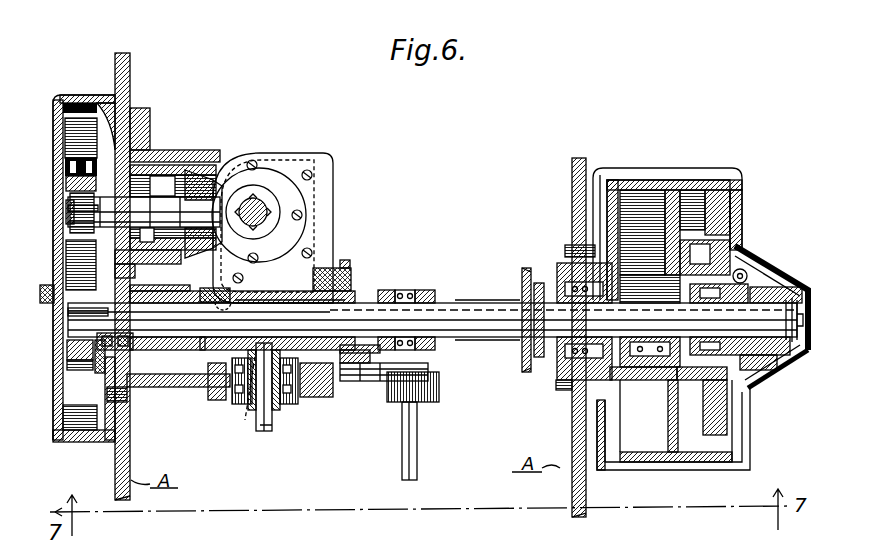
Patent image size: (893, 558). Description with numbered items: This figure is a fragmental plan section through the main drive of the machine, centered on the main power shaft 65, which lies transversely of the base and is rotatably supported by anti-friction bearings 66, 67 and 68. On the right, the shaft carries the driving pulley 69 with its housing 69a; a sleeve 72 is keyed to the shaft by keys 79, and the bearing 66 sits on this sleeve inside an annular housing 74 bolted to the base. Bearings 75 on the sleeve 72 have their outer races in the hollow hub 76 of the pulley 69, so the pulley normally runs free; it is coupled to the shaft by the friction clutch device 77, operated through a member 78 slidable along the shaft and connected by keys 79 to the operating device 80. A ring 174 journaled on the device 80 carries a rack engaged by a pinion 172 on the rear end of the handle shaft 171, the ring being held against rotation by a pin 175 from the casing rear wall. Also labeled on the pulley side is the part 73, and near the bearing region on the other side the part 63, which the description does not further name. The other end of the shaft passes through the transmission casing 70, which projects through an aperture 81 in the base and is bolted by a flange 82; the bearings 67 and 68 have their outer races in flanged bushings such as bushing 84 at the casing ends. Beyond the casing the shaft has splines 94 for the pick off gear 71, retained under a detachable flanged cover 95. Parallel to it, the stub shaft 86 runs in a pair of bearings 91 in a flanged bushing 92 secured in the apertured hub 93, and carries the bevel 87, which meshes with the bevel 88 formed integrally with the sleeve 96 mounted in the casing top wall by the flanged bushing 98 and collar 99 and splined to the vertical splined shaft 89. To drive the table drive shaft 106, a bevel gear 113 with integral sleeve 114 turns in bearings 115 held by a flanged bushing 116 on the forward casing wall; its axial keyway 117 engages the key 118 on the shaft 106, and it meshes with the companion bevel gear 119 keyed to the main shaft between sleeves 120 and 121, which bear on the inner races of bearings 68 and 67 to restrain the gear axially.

The bearing block 63 is at (386, 290).
The main power shaft 65 is at (466, 302).
The anti-friction bearing 66 is at (536, 365).
The anti-friction bearing 67 is at (346, 285).
The anti-friction bearing 68 is at (134, 353).
The driving pulley 69 is at (680, 168).
The housing 69a is at (730, 466).
The transmission casing 70 is at (176, 388).
The gear 71 is at (54, 357).
The sleeve 72 is at (556, 282).
The gear 73 is at (652, 282).
The annular housing 74 is at (572, 386).
The bearings 75 is at (664, 384).
The hollow hub 76 is at (632, 376).
The friction clutch device 77 is at (744, 252).
The member 78 is at (778, 362).
The keys 79 is at (484, 302).
The operating device 80 is at (432, 290).
The aperture 81 is at (130, 400).
The flange 82 is at (106, 430).
The flanged bushing 84 is at (104, 370).
The stub shaft 86 is at (143, 212).
The bevel 87 is at (202, 168).
The bevel 88 is at (254, 160).
The vertical splined shaft 89 is at (270, 200).
The bearings 91 is at (173, 207).
The flanged bushing 92 is at (165, 144).
The apertured hub 93 is at (140, 264).
The splines 94 is at (66, 210).
The detachable flanged cover 95 is at (58, 430).
The sleeve 96 is at (268, 209).
The flanged bushing 98 is at (308, 196).
The collar 99 is at (286, 156).
The table drive shaft 106 is at (266, 432).
The bevel gear 113 is at (228, 350).
The sleeve 114 is at (232, 404).
The bearings 115 is at (304, 404).
The flanged bushing 116 is at (282, 418).
The axial keyway 117 is at (262, 420).
The key 118 is at (246, 424).
The bevel gear 119 is at (218, 292).
The sleeve 120 is at (160, 286).
The sleeve 121 is at (246, 280).
The shaft 171 is at (418, 449).
The pinion 172 is at (440, 407).
The ring 174 is at (406, 290).
The pin 175 is at (374, 382).